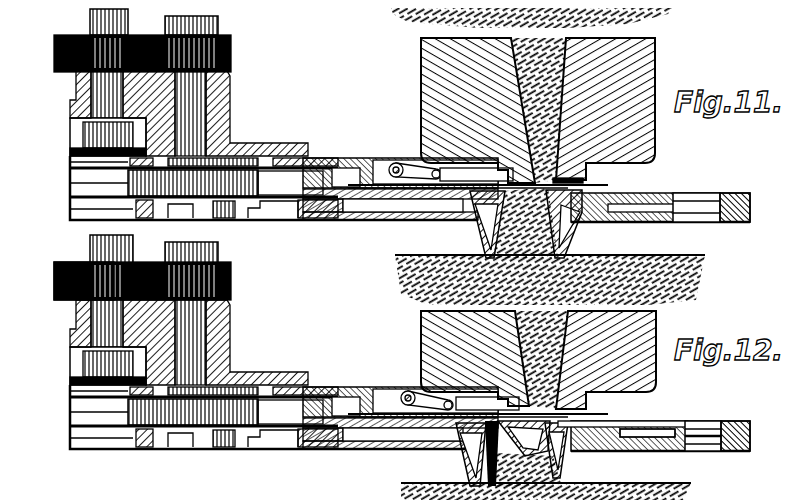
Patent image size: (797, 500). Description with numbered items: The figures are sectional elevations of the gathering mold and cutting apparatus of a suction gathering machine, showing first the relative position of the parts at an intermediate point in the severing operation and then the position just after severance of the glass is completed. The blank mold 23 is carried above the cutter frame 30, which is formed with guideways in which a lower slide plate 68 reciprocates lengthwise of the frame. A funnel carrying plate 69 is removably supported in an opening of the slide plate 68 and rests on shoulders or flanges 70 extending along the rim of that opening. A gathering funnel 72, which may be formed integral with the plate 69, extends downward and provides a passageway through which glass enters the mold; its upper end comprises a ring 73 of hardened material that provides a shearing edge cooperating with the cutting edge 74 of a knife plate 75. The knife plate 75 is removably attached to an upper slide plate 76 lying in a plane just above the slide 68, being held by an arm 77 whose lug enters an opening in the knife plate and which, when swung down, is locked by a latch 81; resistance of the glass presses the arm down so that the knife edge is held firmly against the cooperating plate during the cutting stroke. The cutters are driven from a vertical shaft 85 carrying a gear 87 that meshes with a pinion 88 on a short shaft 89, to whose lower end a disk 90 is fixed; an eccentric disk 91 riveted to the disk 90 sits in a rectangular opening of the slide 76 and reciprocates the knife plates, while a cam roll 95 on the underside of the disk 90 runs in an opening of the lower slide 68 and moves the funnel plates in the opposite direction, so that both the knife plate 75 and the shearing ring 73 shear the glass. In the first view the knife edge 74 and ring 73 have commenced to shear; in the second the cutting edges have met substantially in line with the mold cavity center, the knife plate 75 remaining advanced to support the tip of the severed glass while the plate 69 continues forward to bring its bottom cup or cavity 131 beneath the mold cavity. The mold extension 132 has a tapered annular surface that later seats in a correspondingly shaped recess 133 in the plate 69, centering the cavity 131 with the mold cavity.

In FIG. 11, the blank mold 23 is at (640, 135).
In FIG. 12, the blank mold 23 is at (640, 370).
In FIG. 11, the cutter frame 30 is at (718, 215).
In FIG. 12, the cutter frame 30 is at (722, 413).
In FIG. 11, the slide plate 68 is at (305, 212).
In FIG. 12, the slide plate 68 is at (690, 413).
In FIG. 11, the funnel carrying plate 69 is at (598, 215).
In FIG. 12, the funnel carrying plate 69 is at (612, 444).
In FIG. 11, the shoulders or flanges 70 is at (662, 215).
In FIG. 11, the gathering funnel 72 is at (475, 240).
In FIG. 12, the gathering funnel 72 is at (553, 462).
In FIG. 11, the ring 73 is at (555, 181).
In FIG. 12, the ring 73 is at (503, 453).
In FIG. 11, the cutting edge 74 is at (577, 174).
In FIG. 12, the knife plate 75 is at (487, 404).
In FIG. 11, the slide plate 76 is at (345, 150).
In FIG. 12, the slide plate 76 is at (455, 407).
In FIG. 12, the arm 77 is at (424, 387).
In FIG. 11, the latch 81 is at (45, 45).
In FIG. 12, the vertical shaft 85 is at (96, 342).
In FIG. 12, the gear 87 is at (65, 281).
In FIG. 11, the pinion 88 is at (222, 45).
In FIG. 12, the pinion 88 is at (160, 267).
In FIG. 12, the short shaft 89 is at (217, 342).
In FIG. 11, the disk 90 is at (120, 173).
In FIG. 12, the disk 90 is at (175, 412).
In FIG. 11, the eccentric disk 91 is at (240, 135).
In FIG. 12, the eccentric disk 91 is at (189, 358).
In FIG. 11, the cam roll 95 is at (208, 212).
In FIG. 12, the cam roll 95 is at (274, 428).
In FIG. 12, the bottom cup or cavity 131 is at (580, 416).
In FIG. 11, the extension 132 is at (451, 172).
In FIG. 12, the recess 133 is at (620, 420).